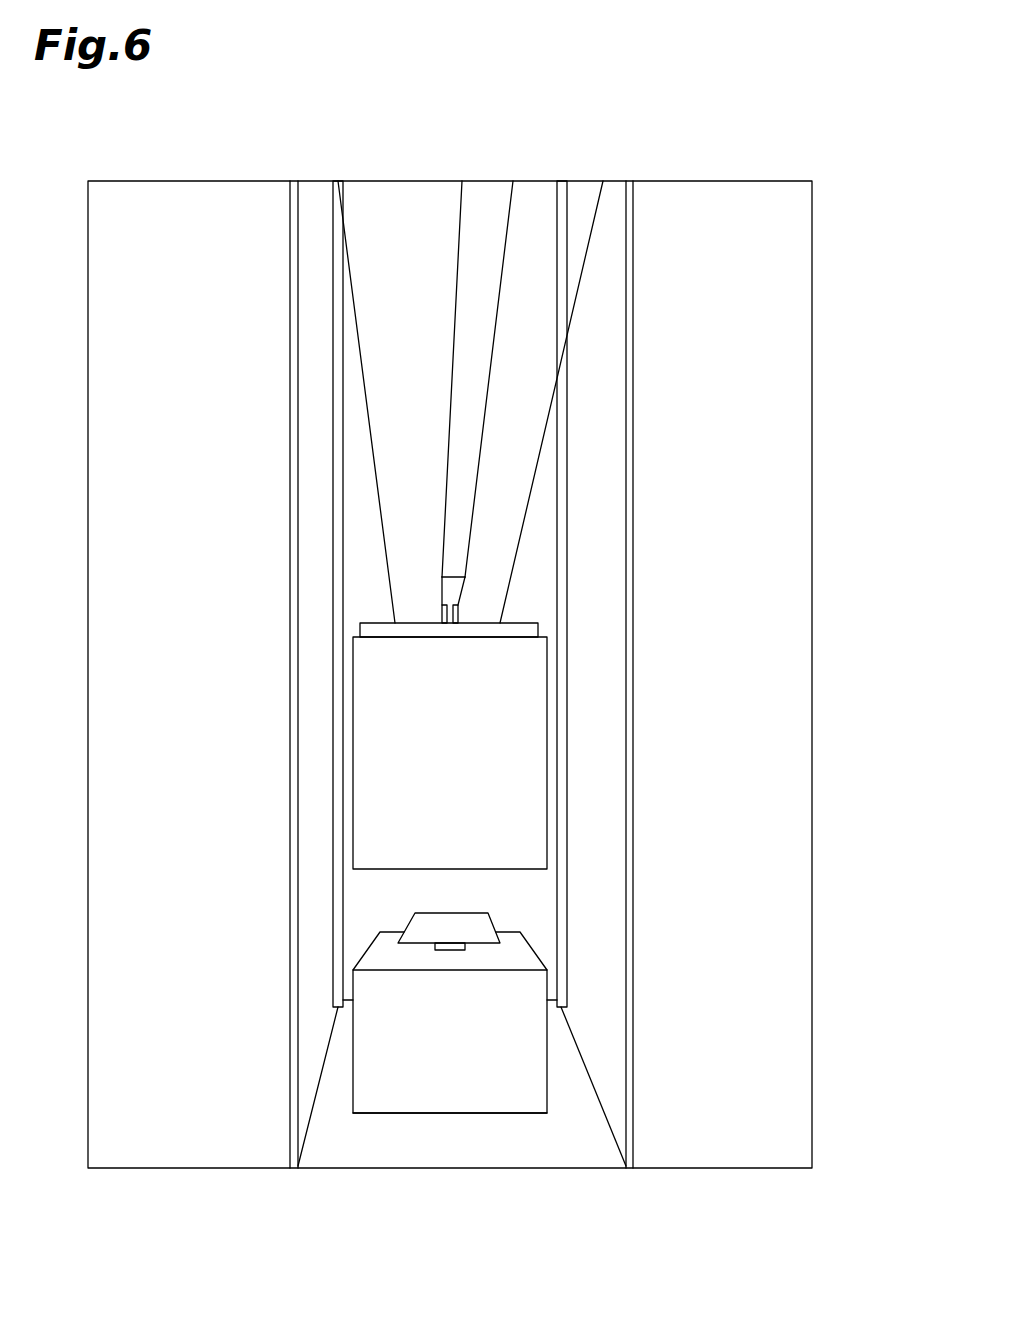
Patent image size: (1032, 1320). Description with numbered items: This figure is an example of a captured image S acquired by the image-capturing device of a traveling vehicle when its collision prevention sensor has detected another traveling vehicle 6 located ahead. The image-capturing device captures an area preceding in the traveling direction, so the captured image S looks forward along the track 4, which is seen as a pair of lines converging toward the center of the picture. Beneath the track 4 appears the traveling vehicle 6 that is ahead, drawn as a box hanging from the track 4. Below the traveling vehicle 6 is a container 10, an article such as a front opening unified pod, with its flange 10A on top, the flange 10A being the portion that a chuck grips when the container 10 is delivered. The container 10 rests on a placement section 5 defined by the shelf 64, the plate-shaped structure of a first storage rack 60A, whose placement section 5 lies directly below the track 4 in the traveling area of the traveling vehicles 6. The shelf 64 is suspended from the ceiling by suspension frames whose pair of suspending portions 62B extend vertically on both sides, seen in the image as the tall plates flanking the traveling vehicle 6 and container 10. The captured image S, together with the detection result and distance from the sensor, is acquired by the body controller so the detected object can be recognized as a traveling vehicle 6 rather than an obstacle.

The captured image S is at (812, 286).
The track 4 is at (488, 181).
The placement section 5 is at (450, 1113).
The overhead traveling vehicle 6 is at (548, 737).
The container 10 is at (512, 1055).
The flange 10A is at (467, 923).
The first storage rack 60A is at (289, 1074).
The suspending portion 62B is at (563, 645).
The shelf 64 is at (538, 1152).